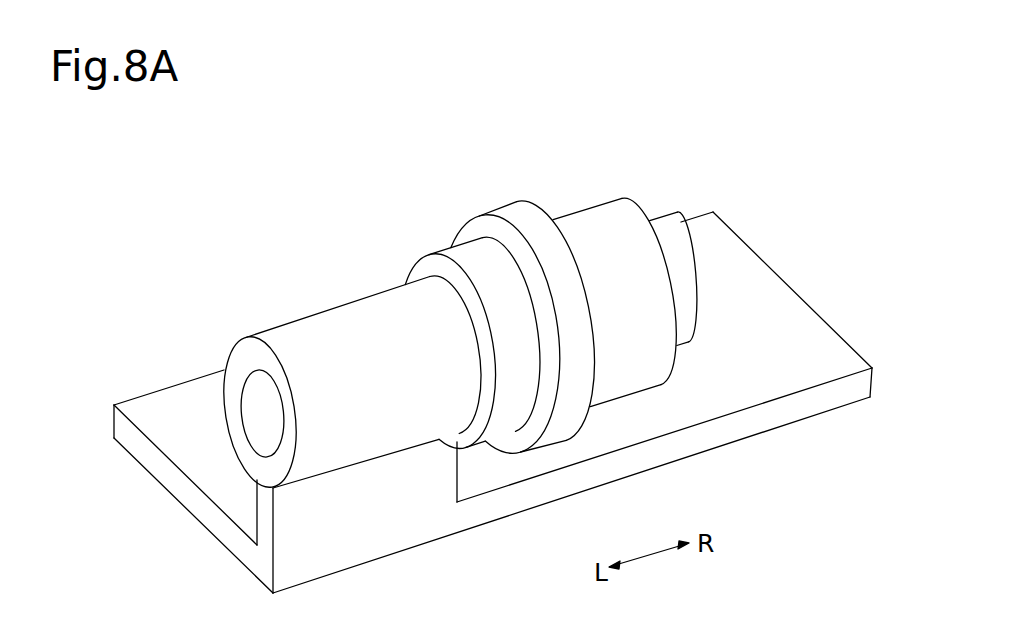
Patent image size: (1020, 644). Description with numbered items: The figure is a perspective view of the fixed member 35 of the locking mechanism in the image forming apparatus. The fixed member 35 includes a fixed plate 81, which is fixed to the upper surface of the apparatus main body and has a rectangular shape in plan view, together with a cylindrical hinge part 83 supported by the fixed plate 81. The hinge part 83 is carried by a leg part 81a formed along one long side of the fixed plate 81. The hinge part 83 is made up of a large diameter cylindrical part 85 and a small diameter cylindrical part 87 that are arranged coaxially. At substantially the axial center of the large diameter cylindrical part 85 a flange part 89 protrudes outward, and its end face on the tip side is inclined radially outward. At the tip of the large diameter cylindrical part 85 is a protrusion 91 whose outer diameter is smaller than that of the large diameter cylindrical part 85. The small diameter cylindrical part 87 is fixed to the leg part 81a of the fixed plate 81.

The fixed member 35 is at (400, 196).
The fixed plate 81 is at (772, 360).
The leg part 81a is at (440, 475).
The hinge part 83 is at (300, 311).
The large diameter cylindrical part 85 is at (607, 222).
The small diameter cylindrical part 87 is at (357, 316).
The flange part 89 is at (532, 230).
The protrusion 91 is at (675, 238).